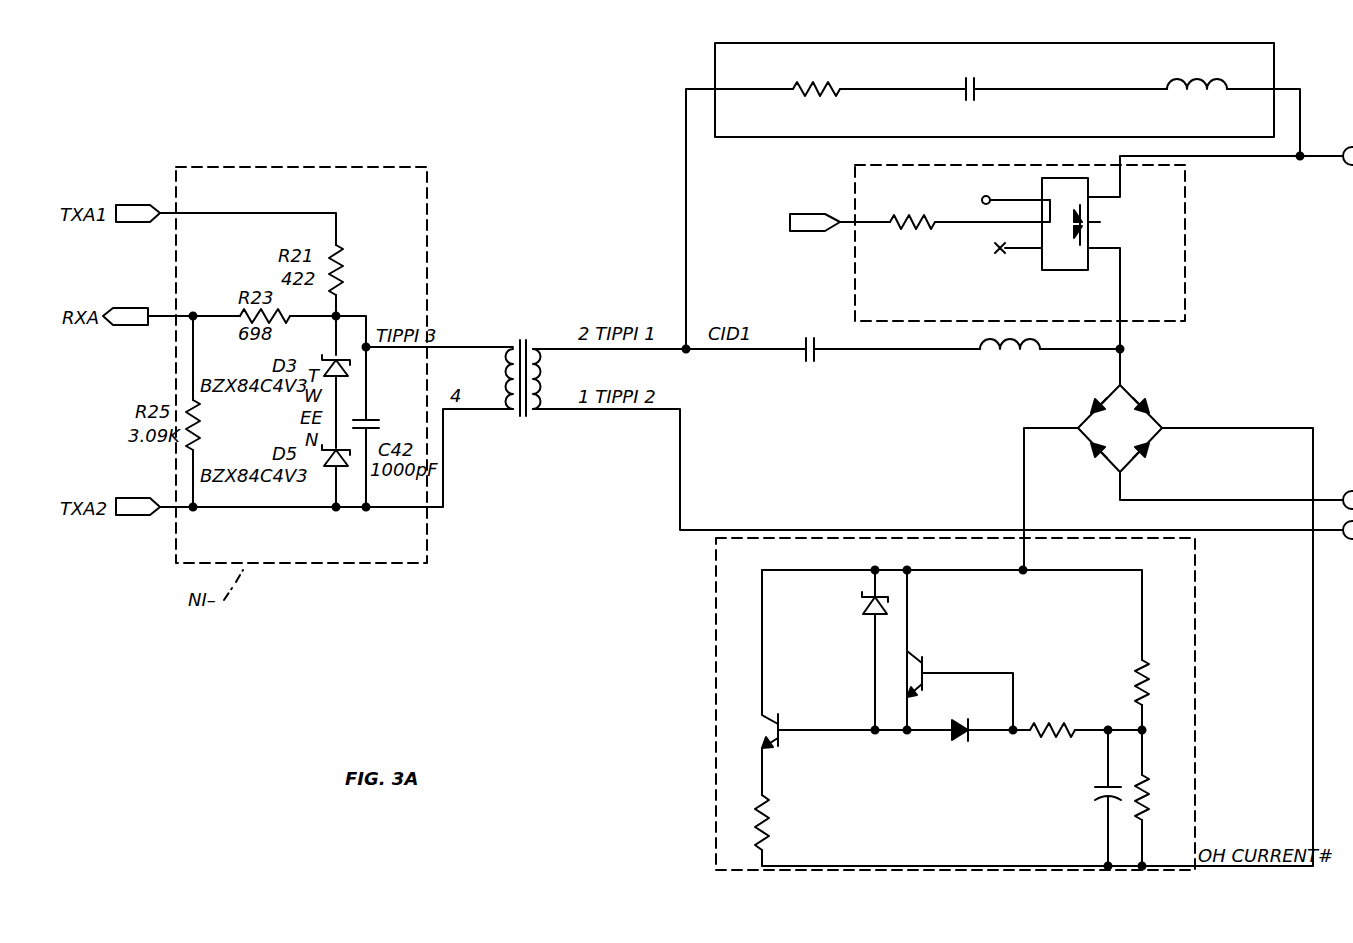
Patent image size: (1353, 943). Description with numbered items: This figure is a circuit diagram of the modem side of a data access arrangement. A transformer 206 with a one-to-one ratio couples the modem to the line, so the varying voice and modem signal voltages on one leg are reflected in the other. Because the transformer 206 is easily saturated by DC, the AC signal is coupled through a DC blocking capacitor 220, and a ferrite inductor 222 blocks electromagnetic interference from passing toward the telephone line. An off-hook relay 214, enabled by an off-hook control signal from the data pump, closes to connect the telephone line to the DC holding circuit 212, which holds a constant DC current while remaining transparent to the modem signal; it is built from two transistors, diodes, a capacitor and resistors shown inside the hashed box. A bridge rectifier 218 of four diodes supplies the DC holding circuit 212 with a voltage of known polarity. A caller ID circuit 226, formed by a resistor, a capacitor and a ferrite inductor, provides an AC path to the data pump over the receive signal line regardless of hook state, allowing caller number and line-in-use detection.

The transformer 206 is at (530, 412).
The DC holding circuit 212 is at (713, 613).
The off-hook relay 214 is at (1190, 210).
The bridge rectifier 218 is at (1158, 418).
The capacitor 220 is at (797, 360).
The inductor 222 is at (980, 360).
The caller ID circuit 226 is at (1277, 46).